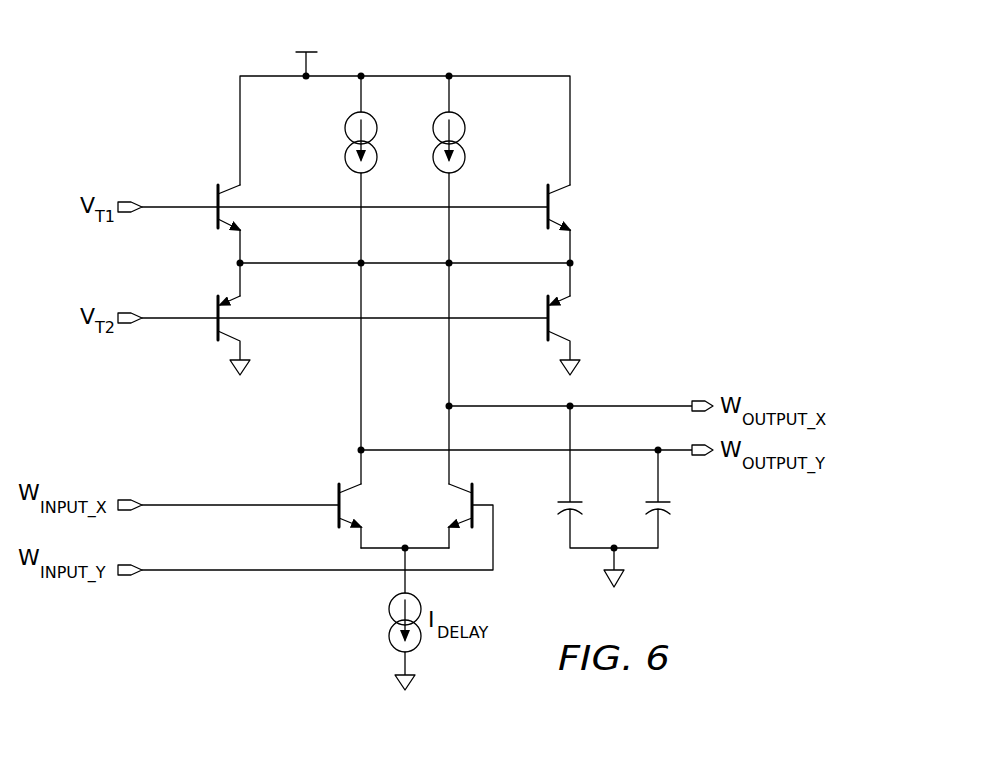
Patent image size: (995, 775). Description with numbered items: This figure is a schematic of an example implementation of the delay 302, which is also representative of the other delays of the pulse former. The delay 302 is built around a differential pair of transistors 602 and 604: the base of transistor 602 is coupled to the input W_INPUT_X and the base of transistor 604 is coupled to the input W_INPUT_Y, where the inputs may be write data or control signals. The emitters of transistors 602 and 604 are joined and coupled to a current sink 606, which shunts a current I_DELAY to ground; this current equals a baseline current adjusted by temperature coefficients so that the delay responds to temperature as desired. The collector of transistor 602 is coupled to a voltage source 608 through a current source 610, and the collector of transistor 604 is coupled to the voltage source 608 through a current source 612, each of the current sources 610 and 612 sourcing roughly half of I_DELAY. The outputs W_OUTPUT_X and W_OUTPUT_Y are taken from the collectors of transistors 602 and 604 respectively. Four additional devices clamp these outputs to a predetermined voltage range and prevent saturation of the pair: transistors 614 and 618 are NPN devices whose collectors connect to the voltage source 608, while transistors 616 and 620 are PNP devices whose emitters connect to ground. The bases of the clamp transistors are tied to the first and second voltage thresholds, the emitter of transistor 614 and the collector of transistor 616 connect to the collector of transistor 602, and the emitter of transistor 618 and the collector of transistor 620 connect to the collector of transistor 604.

The delay 302 is at (706, 100).
The transistor 602 is at (337, 498).
The transistor 604 is at (474, 498).
The current sink 606 is at (389, 637).
The voltage source 608 is at (300, 51).
The current source 610 is at (346, 128).
The current source 612 is at (465, 128).
The transistor 614 is at (216, 203).
The transistor 616 is at (216, 320).
The transistor 618 is at (546, 203).
The transistor 620 is at (546, 320).